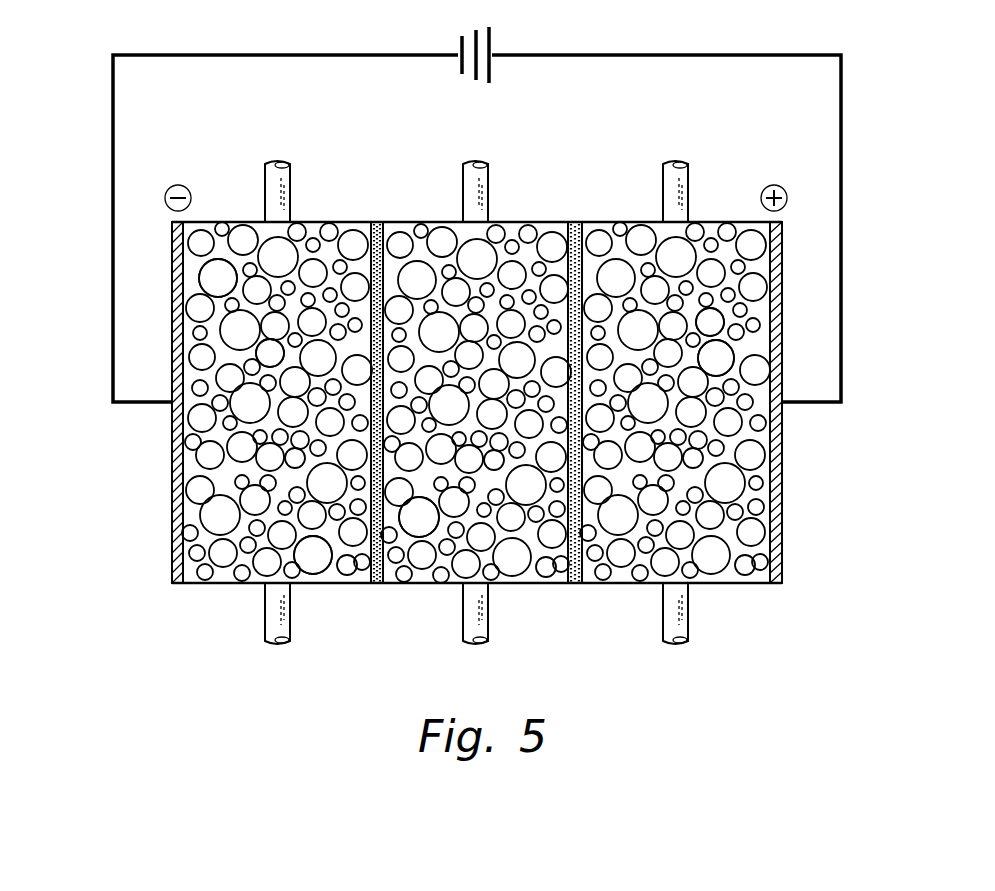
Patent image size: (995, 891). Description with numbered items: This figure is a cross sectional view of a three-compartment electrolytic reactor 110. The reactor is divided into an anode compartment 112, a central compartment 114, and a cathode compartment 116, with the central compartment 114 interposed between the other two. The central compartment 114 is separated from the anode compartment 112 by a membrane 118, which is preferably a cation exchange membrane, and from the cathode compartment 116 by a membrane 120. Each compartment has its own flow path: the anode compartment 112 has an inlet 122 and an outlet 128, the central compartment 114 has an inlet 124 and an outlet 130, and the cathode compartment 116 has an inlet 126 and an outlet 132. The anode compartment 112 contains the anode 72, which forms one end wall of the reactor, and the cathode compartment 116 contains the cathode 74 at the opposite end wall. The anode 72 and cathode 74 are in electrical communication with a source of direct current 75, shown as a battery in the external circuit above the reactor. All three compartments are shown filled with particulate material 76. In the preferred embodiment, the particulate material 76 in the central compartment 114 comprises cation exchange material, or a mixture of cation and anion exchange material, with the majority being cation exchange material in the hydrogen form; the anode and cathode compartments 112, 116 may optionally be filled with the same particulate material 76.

The source of direct current 75 is at (492, 43).
The three-compartment electrolytic reactor 110 is at (118, 573).
The cathode 74 is at (172, 460).
The anode 72 is at (782, 512).
The membrane 120 is at (375, 222).
The membrane 118 is at (576, 222).
The outlet 132 is at (265, 183).
The outlet 130 is at (488, 188).
The outlet 128 is at (688, 188).
The inlet 126 is at (265, 625).
The inlet 124 is at (488, 617).
The inlet 122 is at (688, 620).
The cathode compartment 116 is at (266, 542).
The central compartment 114 is at (530, 535).
The anode compartment 112 is at (725, 535).
The particulate material 76 is at (270, 353).